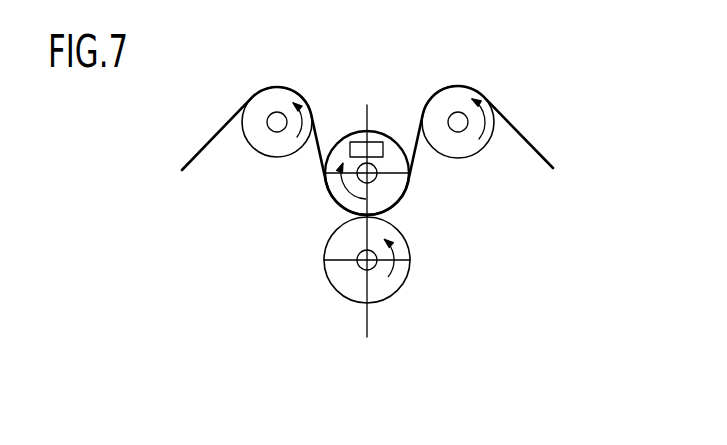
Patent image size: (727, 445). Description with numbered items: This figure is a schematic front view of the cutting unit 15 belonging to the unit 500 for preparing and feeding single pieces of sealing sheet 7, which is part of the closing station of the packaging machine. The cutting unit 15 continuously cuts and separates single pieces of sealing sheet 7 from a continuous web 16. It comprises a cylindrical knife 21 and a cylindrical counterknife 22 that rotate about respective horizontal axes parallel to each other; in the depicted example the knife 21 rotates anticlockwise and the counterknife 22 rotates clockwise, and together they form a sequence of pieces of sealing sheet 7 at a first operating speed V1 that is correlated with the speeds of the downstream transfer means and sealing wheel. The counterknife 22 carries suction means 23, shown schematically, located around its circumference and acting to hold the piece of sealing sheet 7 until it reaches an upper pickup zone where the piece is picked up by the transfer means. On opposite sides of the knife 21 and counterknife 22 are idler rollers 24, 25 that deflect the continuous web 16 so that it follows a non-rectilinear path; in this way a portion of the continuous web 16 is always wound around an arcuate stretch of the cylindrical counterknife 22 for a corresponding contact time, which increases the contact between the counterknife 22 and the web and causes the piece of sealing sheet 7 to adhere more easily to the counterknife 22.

The unit for preparing and feeding single pieces of sealing sheet 500 is at (253, 242).
The continuous web 16 is at (187, 162).
The idler roller 25 is at (250, 113).
The idler roller 24 is at (477, 88).
The cutting unit 15 is at (318, 288).
The cylindrical counterknife 22 is at (397, 182).
The cylindrical knife 21 is at (390, 278).
The piece of sealing sheet 7 is at (360, 142).
The suction means 23 is at (366, 152).
The first operating speed V1 is at (327, 193).